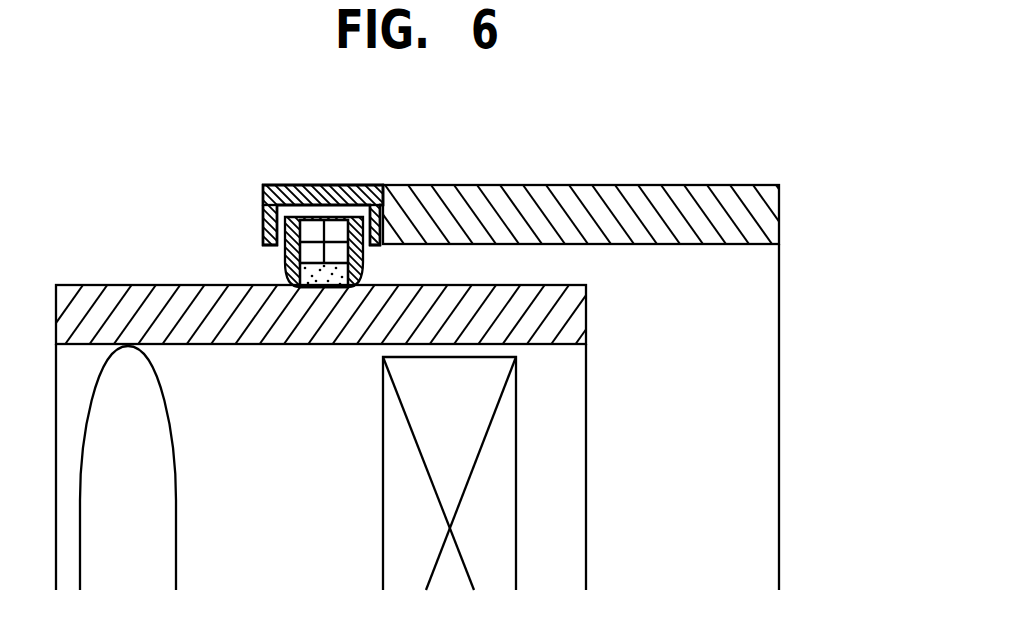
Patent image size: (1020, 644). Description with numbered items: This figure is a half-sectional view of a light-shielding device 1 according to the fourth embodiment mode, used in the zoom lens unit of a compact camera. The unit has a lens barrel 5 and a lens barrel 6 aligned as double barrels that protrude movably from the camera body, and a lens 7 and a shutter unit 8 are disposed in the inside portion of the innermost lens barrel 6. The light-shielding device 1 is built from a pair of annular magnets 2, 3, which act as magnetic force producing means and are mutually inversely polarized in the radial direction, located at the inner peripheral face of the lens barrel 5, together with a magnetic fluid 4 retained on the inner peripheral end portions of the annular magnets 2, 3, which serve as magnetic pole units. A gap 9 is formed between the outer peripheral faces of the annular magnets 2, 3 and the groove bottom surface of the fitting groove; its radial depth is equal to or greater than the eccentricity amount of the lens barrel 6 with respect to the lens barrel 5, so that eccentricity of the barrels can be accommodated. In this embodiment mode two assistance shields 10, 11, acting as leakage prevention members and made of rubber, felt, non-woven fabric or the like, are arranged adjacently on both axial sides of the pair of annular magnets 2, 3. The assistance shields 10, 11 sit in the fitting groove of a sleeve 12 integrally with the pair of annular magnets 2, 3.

The light-shielding device 1 is at (338, 183).
The annular magnet 2 is at (292, 188).
The annular magnet 3 is at (372, 190).
The magnetic fluid 4 is at (355, 263).
The lens barrel 5 is at (478, 187).
The lens barrel 6 is at (132, 287).
The lens 7 is at (160, 447).
The shutter unit 8 is at (395, 505).
The gap 9 is at (324, 190).
The assistance shield 10 is at (264, 237).
The assistance shield 11 is at (372, 237).
The sleeve 12 is at (264, 193).